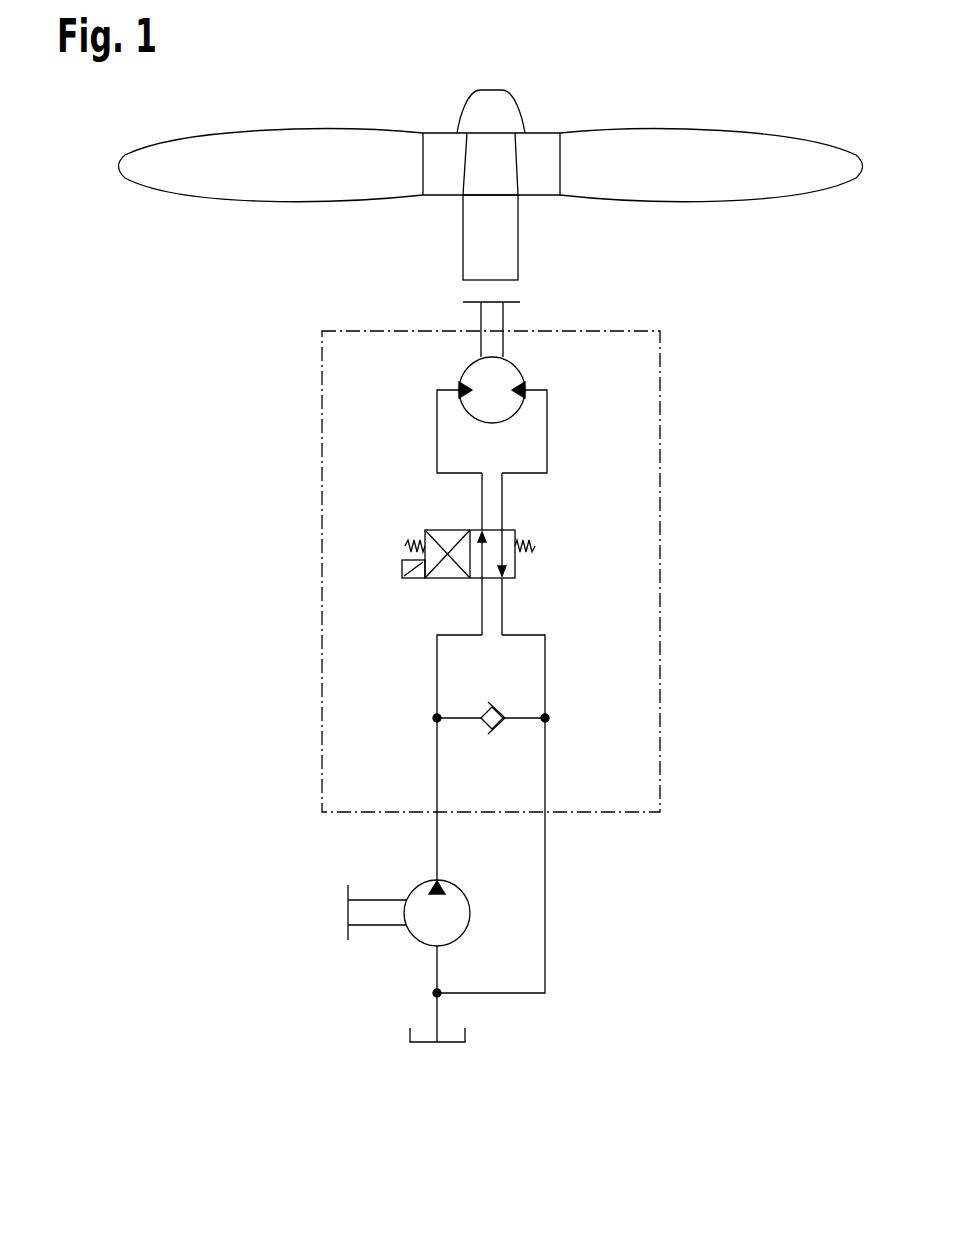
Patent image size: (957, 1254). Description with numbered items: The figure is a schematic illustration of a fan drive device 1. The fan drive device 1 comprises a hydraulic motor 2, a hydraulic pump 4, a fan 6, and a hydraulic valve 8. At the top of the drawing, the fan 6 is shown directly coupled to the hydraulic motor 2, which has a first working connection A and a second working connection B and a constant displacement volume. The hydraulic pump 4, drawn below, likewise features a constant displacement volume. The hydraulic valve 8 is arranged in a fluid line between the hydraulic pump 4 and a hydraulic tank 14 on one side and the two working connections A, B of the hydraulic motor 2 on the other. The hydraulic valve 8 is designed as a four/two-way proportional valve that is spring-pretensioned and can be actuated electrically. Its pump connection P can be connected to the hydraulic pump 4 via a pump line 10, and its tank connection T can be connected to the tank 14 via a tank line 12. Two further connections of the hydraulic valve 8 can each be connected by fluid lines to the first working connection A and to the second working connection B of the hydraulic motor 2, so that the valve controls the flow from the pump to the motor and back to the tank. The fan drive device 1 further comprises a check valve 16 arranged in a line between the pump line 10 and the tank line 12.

The fan drive device 1 is at (243, 318).
The hydraulic motor 2 is at (535, 358).
The hydraulic pump 4 is at (405, 882).
The fan 6 is at (735, 158).
The hydraulic valve 8 is at (537, 561).
The pump line 10 is at (437, 665).
The tank line 12 is at (545, 768).
The tank 14 is at (478, 1043).
The check valve 16 is at (475, 733).